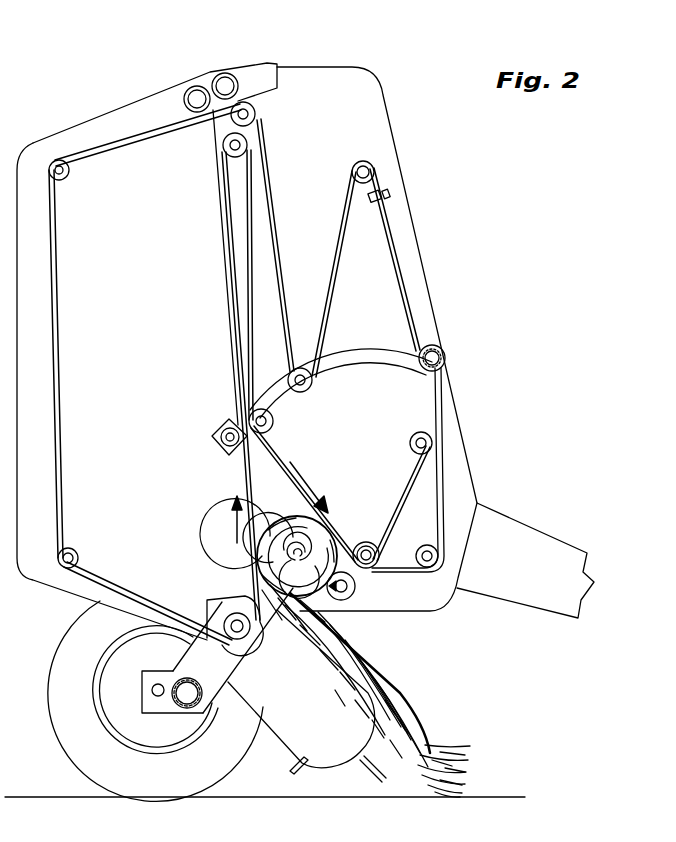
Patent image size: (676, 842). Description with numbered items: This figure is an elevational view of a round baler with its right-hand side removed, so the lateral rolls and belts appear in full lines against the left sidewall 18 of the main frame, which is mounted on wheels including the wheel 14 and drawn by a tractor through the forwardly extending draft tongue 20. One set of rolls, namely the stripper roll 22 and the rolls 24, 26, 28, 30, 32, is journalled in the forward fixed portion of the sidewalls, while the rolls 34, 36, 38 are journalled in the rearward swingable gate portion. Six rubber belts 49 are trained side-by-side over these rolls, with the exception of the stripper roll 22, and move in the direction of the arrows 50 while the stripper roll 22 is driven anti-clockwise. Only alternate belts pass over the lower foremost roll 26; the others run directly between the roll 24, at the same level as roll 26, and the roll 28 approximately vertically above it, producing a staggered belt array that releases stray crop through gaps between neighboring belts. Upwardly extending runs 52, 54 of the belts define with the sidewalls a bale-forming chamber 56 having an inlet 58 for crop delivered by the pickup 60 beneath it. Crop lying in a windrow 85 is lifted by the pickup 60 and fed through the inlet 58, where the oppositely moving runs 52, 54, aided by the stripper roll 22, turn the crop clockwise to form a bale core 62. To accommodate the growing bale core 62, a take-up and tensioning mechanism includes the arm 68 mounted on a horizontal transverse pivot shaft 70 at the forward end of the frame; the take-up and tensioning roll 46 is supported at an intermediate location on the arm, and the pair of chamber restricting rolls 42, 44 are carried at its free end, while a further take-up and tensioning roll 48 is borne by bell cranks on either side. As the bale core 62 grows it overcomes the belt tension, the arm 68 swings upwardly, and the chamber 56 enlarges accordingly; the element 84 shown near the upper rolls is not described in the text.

The wheel 14 is at (52, 652).
The left sidewall 18 is at (378, 128).
The draft tongue 20 is at (553, 556).
The stripper roll 22 is at (355, 589).
The roll 24 is at (364, 542).
The lower foremost roll 26 is at (438, 557).
The roll 28 is at (410, 443).
The roll 30 is at (352, 172).
The roll 32 is at (225, 145).
The roll 34 is at (70, 172).
The roll 36 is at (72, 548).
The roll 38 is at (231, 640).
The chamber restricting roll 42 is at (222, 430).
The chamber restricting roll 44 is at (274, 421).
The take-up and tensioning roll 46 is at (303, 366).
The take-up and tensioning roll 48 is at (256, 114).
The rubber belts 49 is at (400, 214).
The arrows 50 is at (232, 522).
The upwardly extending run 52 is at (255, 568).
The upwardly extending run 54 is at (330, 528).
The bale-forming chamber 56 is at (263, 472).
The inlet 58 is at (325, 604).
The pickup 60 is at (332, 728).
The bale core 62 is at (276, 610).
The arm 68 is at (388, 364).
The pivot shaft 70 is at (446, 351).
The roller pair 84 is at (201, 55).
The windrow 85 is at (445, 770).